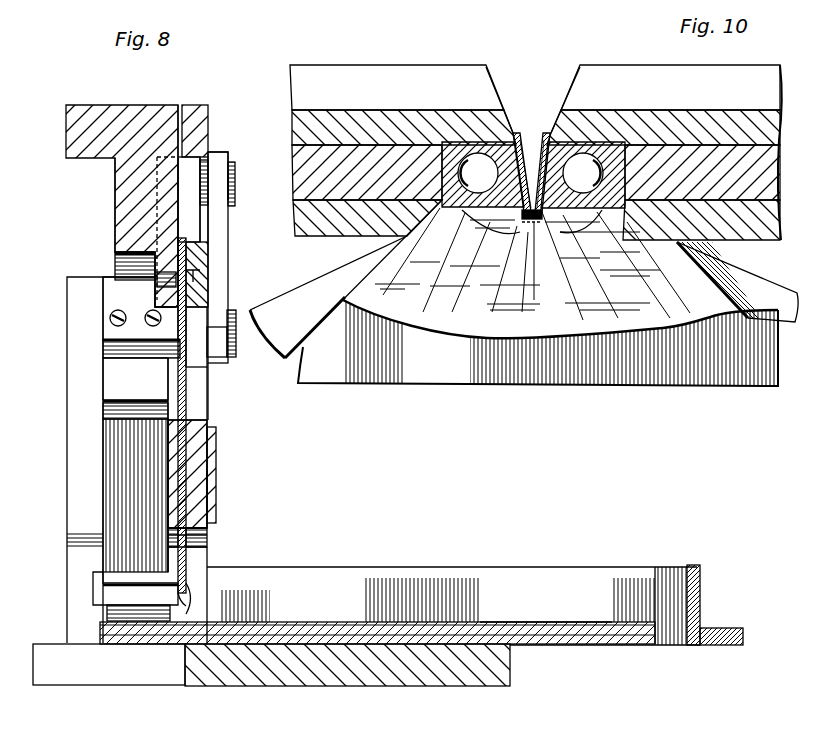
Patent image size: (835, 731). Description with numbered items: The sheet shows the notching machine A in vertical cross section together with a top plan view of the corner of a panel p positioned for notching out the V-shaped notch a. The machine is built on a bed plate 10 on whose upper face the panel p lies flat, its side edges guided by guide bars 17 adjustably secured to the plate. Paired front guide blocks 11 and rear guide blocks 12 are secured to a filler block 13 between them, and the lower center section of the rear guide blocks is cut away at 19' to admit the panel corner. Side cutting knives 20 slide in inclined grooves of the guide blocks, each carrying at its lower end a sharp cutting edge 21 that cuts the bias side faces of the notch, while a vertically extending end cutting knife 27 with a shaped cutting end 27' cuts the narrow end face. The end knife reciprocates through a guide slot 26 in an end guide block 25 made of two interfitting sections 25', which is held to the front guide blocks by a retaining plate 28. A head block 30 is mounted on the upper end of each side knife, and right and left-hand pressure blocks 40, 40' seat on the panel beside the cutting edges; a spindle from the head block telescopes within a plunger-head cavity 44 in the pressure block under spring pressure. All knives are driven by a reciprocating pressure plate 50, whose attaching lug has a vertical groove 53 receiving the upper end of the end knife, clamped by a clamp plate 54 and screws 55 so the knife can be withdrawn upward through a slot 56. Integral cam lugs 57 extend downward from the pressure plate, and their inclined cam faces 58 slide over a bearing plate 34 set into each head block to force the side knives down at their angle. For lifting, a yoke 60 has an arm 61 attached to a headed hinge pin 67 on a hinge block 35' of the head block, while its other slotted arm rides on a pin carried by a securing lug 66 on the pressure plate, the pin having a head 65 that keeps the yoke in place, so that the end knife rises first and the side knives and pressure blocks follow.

In FIG. 8, the bed plate 10 is at (505, 669).
In FIG. 10, the bed plate 10 is at (634, 75).
In FIG. 8, the front guide blocks 11 is at (208, 541).
In FIG. 10, the front guide blocks 11 is at (337, 233).
In FIG. 8, the rear guide blocks 12 is at (70, 468).
In FIG. 10, the rear guide blocks 12 is at (352, 118).
In FIG. 8, the filler block 13 is at (255, 185).
In FIG. 10, the filler block 13 is at (293, 186).
In FIG. 8, the guide bars 17 is at (617, 573).
In FIG. 10, the guide bars 17 is at (524, 279).
In FIG. 8, the cut-away 19' is at (100, 680).
In FIG. 10, the cut-away 19' is at (536, 76).
In FIG. 8, the side cutting knives 20 is at (152, 469).
In FIG. 10, the side cutting knives 20 is at (514, 132).
In FIG. 8, the cutting edge 21 is at (95, 593).
In FIG. 10, the cutting edge 21 is at (532, 130).
In FIG. 8, the end guide block 25 is at (215, 464).
In FIG. 8, the sections 25' is at (218, 526).
In FIG. 8, the guide slot 26 is at (190, 488).
In FIG. 8, the end cutting knife 27 is at (227, 325).
In FIG. 10, the end cutting knife 27 is at (529, 261).
In FIG. 8, the cutting end 27' is at (377, 650).
In FIG. 8, the retaining plate 28 is at (216, 433).
In FIG. 8, the head block 30 is at (105, 291).
In FIG. 8, the bearing plate 34 is at (115, 268).
In FIG. 8, the hinge block 35' is at (95, 331).
In FIG. 8, the pressure block 40 is at (95, 617).
In FIG. 10, the pressure block 40 is at (482, 203).
In FIG. 10, the pad 40' is at (583, 191).
In FIG. 10, the plunger-head cavity 44 is at (462, 214).
In FIG. 8, the pressure plate 50 is at (88, 111).
In FIG. 8, the groove 53 is at (181, 182).
In FIG. 8, the clamp plate 54 is at (200, 257).
In FIG. 8, the screws 55 is at (196, 276).
In FIG. 8, the slot 56 is at (183, 106).
In FIG. 8, the cam lug 57 is at (123, 190).
In FIG. 8, the cam face 58 is at (115, 262).
In FIG. 8, the yoke 60 is at (230, 219).
In FIG. 8, the arm 61 is at (218, 234).
In FIG. 8, the head 65 is at (235, 173).
In FIG. 8, the securing lug 66 is at (190, 162).
In FIG. 8, the hinge pin 67 is at (232, 338).
In FIG. 8, the notching machine A is at (222, 504).
In FIG. 10, the V-shaped notch a is at (548, 122).
In FIG. 8, the panel p is at (548, 619).
In FIG. 10, the panel p is at (447, 330).